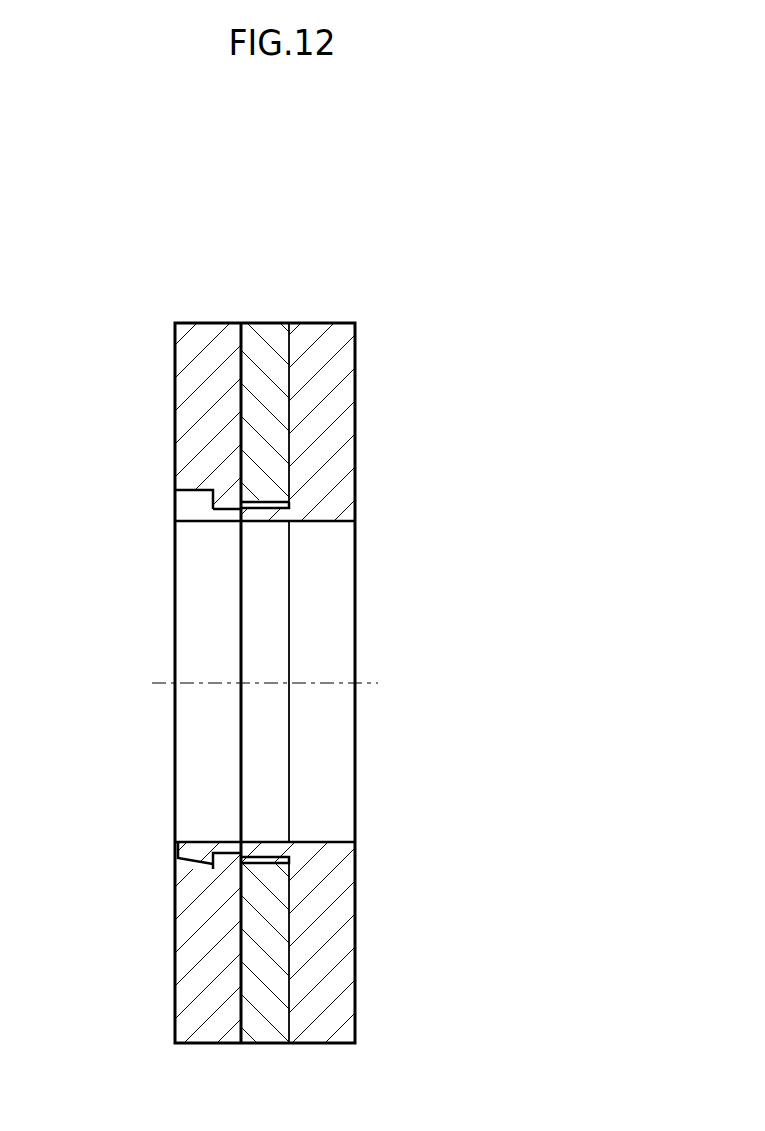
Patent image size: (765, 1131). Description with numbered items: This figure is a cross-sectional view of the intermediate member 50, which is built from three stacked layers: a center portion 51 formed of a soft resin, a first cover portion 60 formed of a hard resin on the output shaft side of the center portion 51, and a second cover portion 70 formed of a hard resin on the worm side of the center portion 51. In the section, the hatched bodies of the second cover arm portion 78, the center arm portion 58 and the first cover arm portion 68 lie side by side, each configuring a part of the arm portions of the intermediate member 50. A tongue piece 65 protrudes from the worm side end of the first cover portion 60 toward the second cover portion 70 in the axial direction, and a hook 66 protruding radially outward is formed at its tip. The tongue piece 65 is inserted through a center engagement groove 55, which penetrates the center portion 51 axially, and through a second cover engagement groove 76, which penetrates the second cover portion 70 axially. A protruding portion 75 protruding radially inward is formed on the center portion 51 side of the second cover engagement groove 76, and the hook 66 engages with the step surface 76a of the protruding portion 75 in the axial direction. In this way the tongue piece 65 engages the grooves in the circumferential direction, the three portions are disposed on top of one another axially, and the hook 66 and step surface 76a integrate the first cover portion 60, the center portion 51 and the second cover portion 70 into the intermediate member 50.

The intermediate member 50 is at (352, 302).
The second cover portion 70 is at (207, 318).
The center portion 51 is at (263, 318).
The first cover portion 60 is at (320, 318).
The second cover arm portion 78 is at (213, 366).
The center arm portion 58 is at (265, 405).
The first cover arm portion 68 is at (312, 364).
The second cover engagement groove 76 is at (193, 492).
The hook 66 is at (200, 503).
The protruding portion 75 is at (230, 510).
The tongue piece 65 is at (253, 510).
The center engagement groove 55 is at (268, 512).
The step surface 76a is at (213, 869).